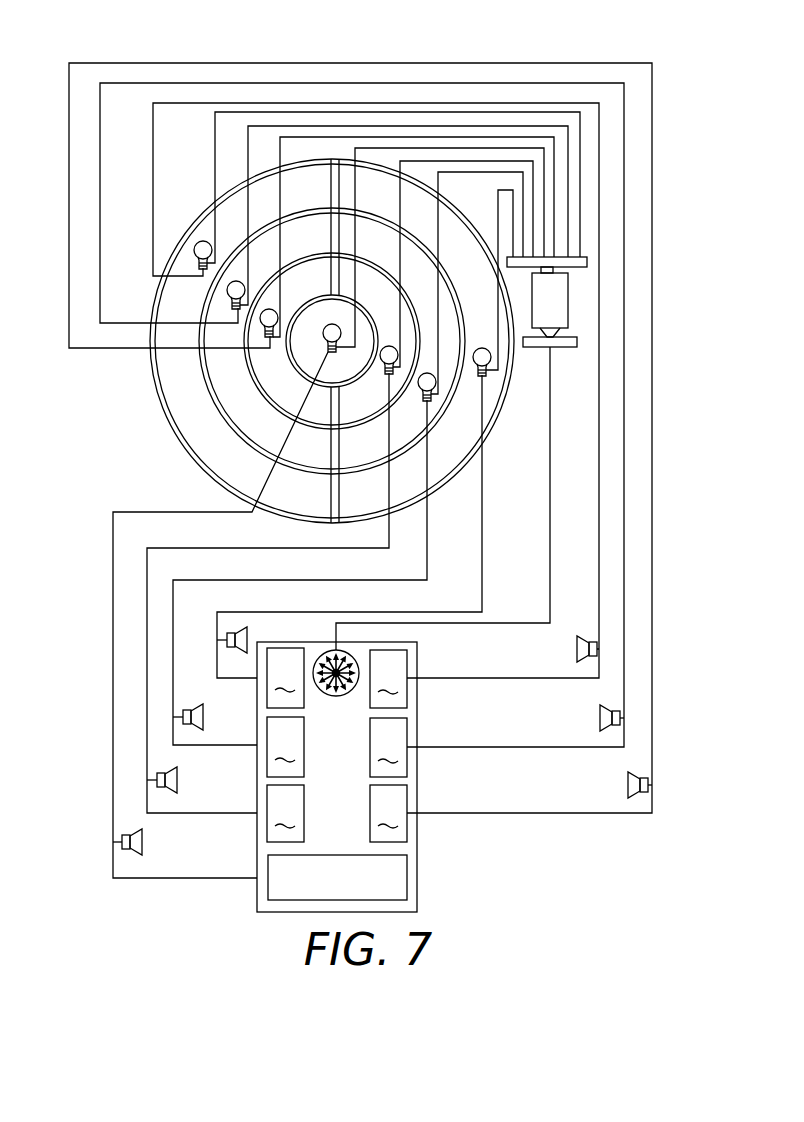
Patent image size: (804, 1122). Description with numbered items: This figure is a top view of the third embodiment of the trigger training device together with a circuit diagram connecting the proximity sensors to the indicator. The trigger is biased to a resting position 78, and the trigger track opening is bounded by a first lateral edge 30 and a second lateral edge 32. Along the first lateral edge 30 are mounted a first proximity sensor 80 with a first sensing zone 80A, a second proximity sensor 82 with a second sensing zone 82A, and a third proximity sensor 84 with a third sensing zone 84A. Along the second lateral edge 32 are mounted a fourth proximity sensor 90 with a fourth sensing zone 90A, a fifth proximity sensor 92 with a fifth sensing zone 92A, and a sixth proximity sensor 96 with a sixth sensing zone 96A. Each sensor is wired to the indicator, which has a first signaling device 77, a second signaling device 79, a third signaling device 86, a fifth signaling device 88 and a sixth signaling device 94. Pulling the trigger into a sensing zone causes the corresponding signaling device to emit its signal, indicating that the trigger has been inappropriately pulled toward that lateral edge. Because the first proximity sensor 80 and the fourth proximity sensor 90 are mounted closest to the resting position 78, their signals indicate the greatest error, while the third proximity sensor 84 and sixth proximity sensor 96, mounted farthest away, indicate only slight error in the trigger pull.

The first lateral edge 30 is at (388, 783).
The second lateral edge 32 is at (420, 882).
The first signaling device 77 is at (413, 202).
The resting position 78 is at (348, 655).
The second signaling device 79 is at (377, 241).
The first proximity sensor 80 is at (285, 678).
The first sensing zone 80A is at (268, 656).
The second proximity sensor 82 is at (285, 747).
The second sensing zone 82A is at (268, 723).
The third proximity sensor 84 is at (285, 813).
The third sensing zone 84A is at (300, 826).
The third signaling device 86 is at (283, 265).
The fifth signaling device 88 is at (237, 387).
The fourth proximity sensor 90 is at (388, 679).
The fourth sensing zone 90A is at (407, 701).
The fifth proximity sensor 92 is at (388, 747).
The fifth sensing zone 92A is at (407, 772).
The sixth signaling device 94 is at (285, 385).
The sixth proximity sensor 96 is at (388, 813).
The sixth sensing zone 96A is at (407, 830).